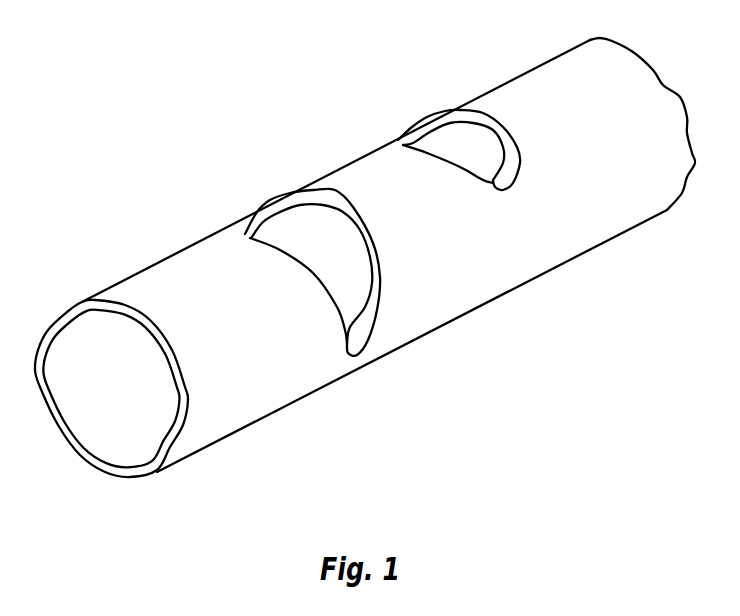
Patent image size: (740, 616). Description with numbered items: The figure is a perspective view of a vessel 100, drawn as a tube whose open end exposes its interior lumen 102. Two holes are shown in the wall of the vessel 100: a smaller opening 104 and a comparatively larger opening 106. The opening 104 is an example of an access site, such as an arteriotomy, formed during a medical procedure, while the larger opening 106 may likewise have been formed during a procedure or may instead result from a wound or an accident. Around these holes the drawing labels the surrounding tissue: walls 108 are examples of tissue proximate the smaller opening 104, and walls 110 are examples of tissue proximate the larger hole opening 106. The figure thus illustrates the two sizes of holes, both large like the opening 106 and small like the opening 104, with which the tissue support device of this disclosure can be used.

The vessel 100 is at (107, 288).
The lumen 102 is at (123, 440).
The opening 104 is at (527, 156).
The opening 106 is at (382, 300).
The walls 108 is at (478, 108).
The walls 110 is at (250, 238).